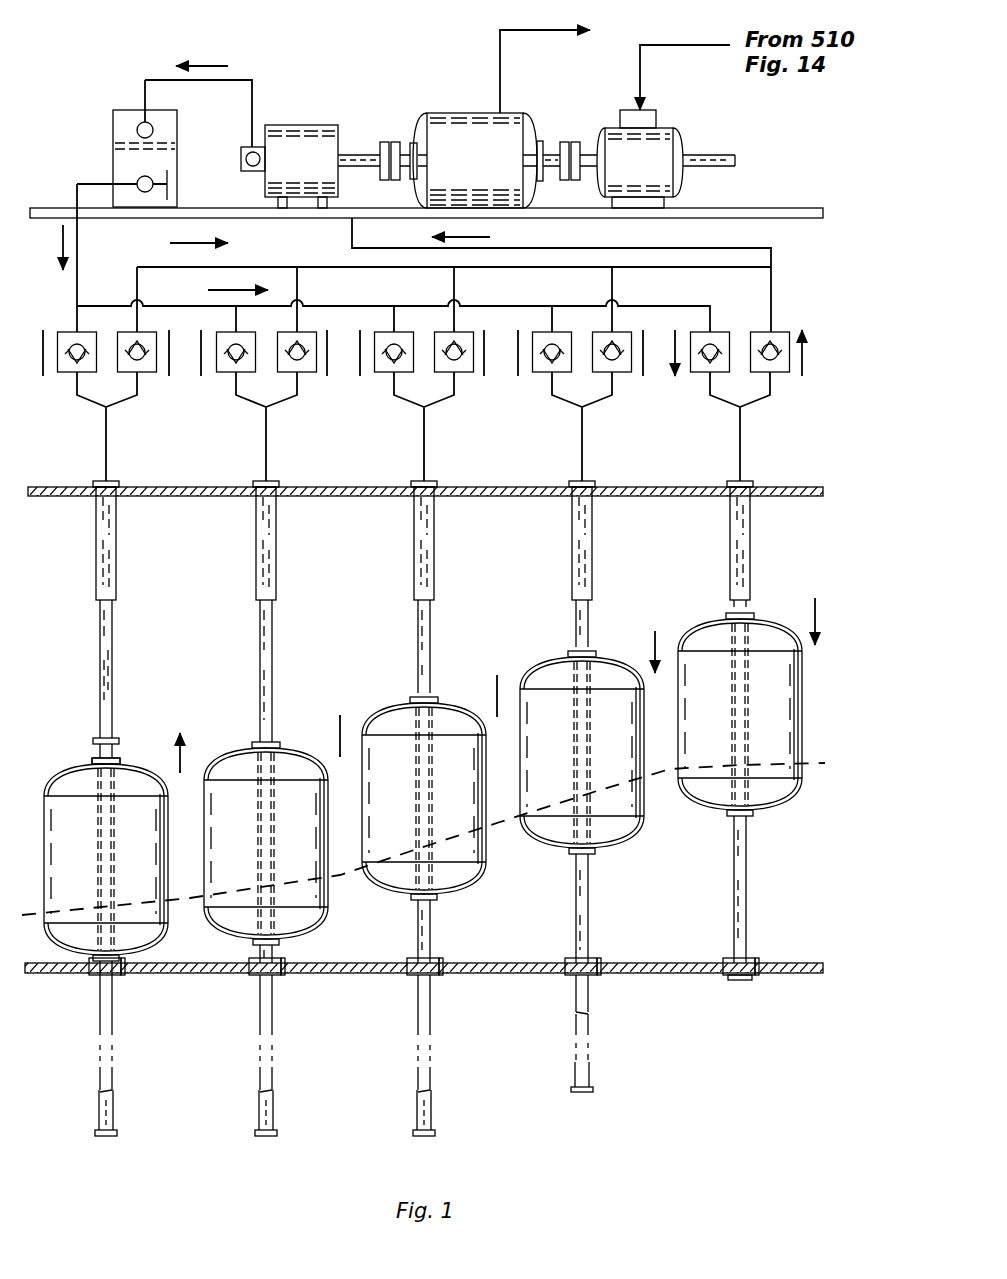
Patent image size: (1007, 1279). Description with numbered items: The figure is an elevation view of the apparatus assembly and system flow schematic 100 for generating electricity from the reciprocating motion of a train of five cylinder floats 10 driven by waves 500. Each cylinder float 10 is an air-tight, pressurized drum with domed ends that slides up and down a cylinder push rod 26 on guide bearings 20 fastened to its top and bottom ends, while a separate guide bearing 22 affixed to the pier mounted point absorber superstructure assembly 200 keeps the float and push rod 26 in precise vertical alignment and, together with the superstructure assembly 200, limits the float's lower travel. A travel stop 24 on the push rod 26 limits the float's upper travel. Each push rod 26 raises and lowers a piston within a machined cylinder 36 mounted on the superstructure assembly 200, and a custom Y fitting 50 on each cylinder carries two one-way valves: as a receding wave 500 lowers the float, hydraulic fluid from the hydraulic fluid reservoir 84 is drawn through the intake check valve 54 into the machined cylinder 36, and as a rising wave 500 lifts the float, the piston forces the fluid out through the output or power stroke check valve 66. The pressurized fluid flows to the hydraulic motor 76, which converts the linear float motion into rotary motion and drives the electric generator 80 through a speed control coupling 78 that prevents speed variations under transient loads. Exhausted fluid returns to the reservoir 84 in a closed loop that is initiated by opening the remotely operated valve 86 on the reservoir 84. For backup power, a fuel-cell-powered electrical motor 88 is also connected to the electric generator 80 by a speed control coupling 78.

The apparatus assembly and system flow schematic 100 is at (122, 70).
The hydraulic fluid reservoir 84 is at (118, 130).
The remotely operated valve 86 is at (137, 183).
The hydraulic motor 76 is at (296, 132).
The speed control coupling 78 is at (390, 141).
The electric generator 80 is at (467, 126).
The electrical motor 88 is at (664, 130).
The pier mounted point absorber superstructure assembly 200 is at (800, 208).
The intake check valve 54 is at (62, 333).
The output or power stroke check valve 66 is at (148, 373).
The custom Y fitting 50 is at (110, 410).
The machined cylinder 36 is at (100, 518).
The cylinder push rod 26 is at (100, 650).
The travel stop 24 is at (95, 740).
The guide bearing 20 is at (92, 761).
The cylinder float 10 is at (56, 802).
The guide bearing 22 is at (90, 968).
The waves 500 is at (825, 766).